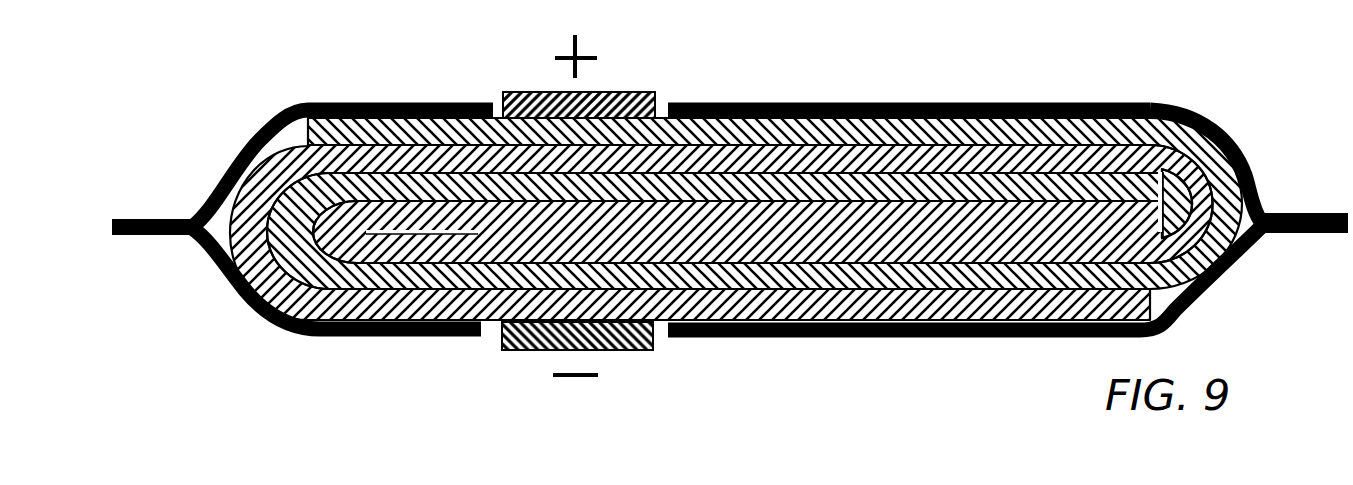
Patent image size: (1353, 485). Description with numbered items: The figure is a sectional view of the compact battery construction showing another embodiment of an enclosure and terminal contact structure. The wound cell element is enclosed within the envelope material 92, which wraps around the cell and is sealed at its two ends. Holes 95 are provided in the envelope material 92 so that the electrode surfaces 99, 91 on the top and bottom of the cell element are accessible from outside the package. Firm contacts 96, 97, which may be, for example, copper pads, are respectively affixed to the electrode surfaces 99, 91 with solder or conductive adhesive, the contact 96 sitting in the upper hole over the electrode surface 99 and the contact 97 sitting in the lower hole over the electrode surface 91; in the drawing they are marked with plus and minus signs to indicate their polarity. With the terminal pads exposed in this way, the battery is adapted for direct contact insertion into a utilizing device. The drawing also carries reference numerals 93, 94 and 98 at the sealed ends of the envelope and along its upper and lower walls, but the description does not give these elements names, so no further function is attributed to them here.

The electrode surface 91 is at (745, 340).
The envelope material 92 is at (259, 135).
The sealed tab / flange 93 is at (136, 220).
The lower casing layer 94 is at (372, 336).
The holes 95 is at (493, 332).
The firm contact 96 is at (623, 92).
The firm contact 97 is at (633, 350).
The upper casing layer 98 is at (822, 101).
The electrode surface 99 is at (718, 101).